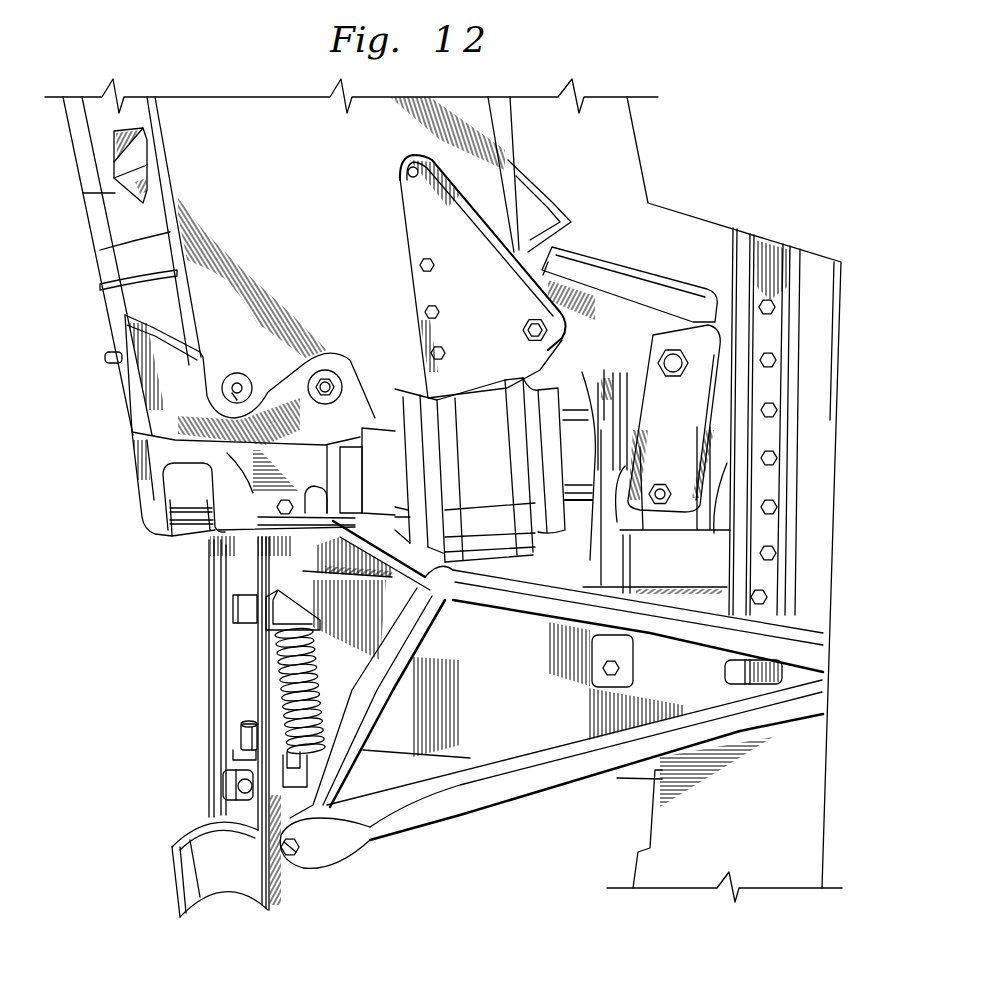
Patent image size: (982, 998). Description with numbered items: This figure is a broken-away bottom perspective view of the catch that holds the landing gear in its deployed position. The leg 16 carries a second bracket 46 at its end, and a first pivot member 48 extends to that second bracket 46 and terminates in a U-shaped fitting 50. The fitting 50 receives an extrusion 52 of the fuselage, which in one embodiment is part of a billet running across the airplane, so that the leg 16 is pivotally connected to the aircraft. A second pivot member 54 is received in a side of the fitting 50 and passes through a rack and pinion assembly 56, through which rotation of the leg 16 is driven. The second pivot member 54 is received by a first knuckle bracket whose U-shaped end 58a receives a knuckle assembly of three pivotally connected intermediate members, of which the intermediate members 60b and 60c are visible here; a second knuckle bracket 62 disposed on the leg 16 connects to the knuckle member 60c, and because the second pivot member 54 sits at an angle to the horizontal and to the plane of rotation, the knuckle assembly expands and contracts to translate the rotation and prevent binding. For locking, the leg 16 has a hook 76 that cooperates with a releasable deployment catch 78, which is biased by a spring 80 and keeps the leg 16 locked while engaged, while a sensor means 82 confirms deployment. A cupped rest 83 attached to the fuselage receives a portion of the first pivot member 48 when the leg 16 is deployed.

The leg 16 is at (311, 204).
The second bracket 46 is at (304, 431).
The first pivot member 48 is at (108, 258).
The U-shaped fitting 50 is at (143, 503).
The extrusion 52 is at (197, 532).
The second pivot member 54 is at (335, 496).
The rack and pinion assembly 56 is at (500, 471).
The U-shaped end 58a is at (707, 526).
The intermediate member 60b is at (693, 424).
The intermediate member 60c is at (634, 357).
The second knuckle bracket 62 is at (420, 290).
The hook 76 is at (140, 160).
The deployment catch 78 is at (235, 800).
The spring 80 is at (317, 640).
The sensor means 82 is at (242, 739).
The cupped rest 83 is at (212, 880).